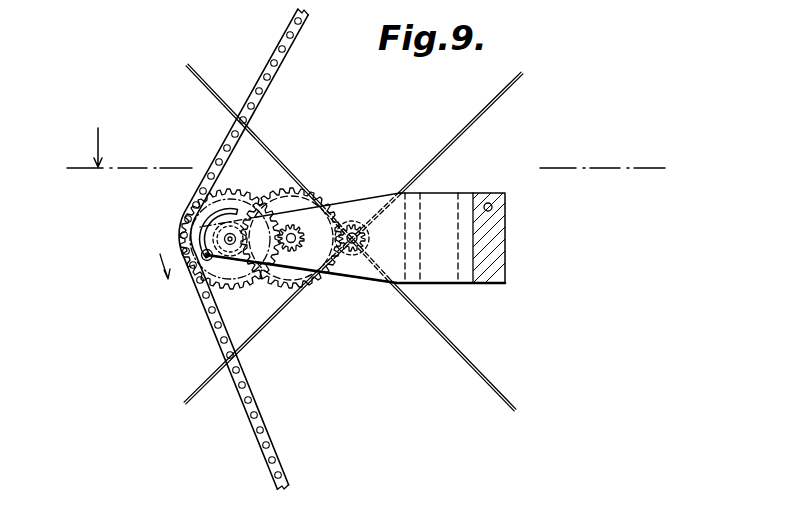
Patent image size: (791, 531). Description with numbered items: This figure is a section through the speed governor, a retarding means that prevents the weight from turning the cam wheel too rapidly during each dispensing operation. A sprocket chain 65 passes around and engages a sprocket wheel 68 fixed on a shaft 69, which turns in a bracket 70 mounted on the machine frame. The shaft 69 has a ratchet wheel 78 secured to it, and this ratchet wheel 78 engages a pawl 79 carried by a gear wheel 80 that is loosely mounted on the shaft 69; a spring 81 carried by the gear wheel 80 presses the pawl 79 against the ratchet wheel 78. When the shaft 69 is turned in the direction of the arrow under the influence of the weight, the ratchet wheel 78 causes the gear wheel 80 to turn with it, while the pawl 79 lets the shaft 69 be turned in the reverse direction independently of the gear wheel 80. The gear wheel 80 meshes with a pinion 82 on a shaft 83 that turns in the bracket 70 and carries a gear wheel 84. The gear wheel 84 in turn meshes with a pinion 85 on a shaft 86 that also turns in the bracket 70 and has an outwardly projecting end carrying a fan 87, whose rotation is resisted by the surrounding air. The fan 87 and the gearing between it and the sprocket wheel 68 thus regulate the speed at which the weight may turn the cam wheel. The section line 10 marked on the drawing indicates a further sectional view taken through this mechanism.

The section line 10- 10 is at (367, 154).
The sprocket chain 65 is at (257, 437).
The sprocket wheel 68 is at (243, 289).
The shaft 69 is at (231, 233).
The bracket 70 is at (372, 203).
The ratchet wheel 78 is at (210, 265).
The pawl 79 is at (203, 252).
The gear wheel 80 is at (213, 214).
The spring 81 is at (203, 228).
The pinion 82 is at (313, 204).
The shaft 83 is at (292, 246).
The gear wheel 84 is at (287, 200).
The pinion 85 is at (366, 264).
The shaft 86 is at (352, 246).
The fan 87 is at (477, 372).